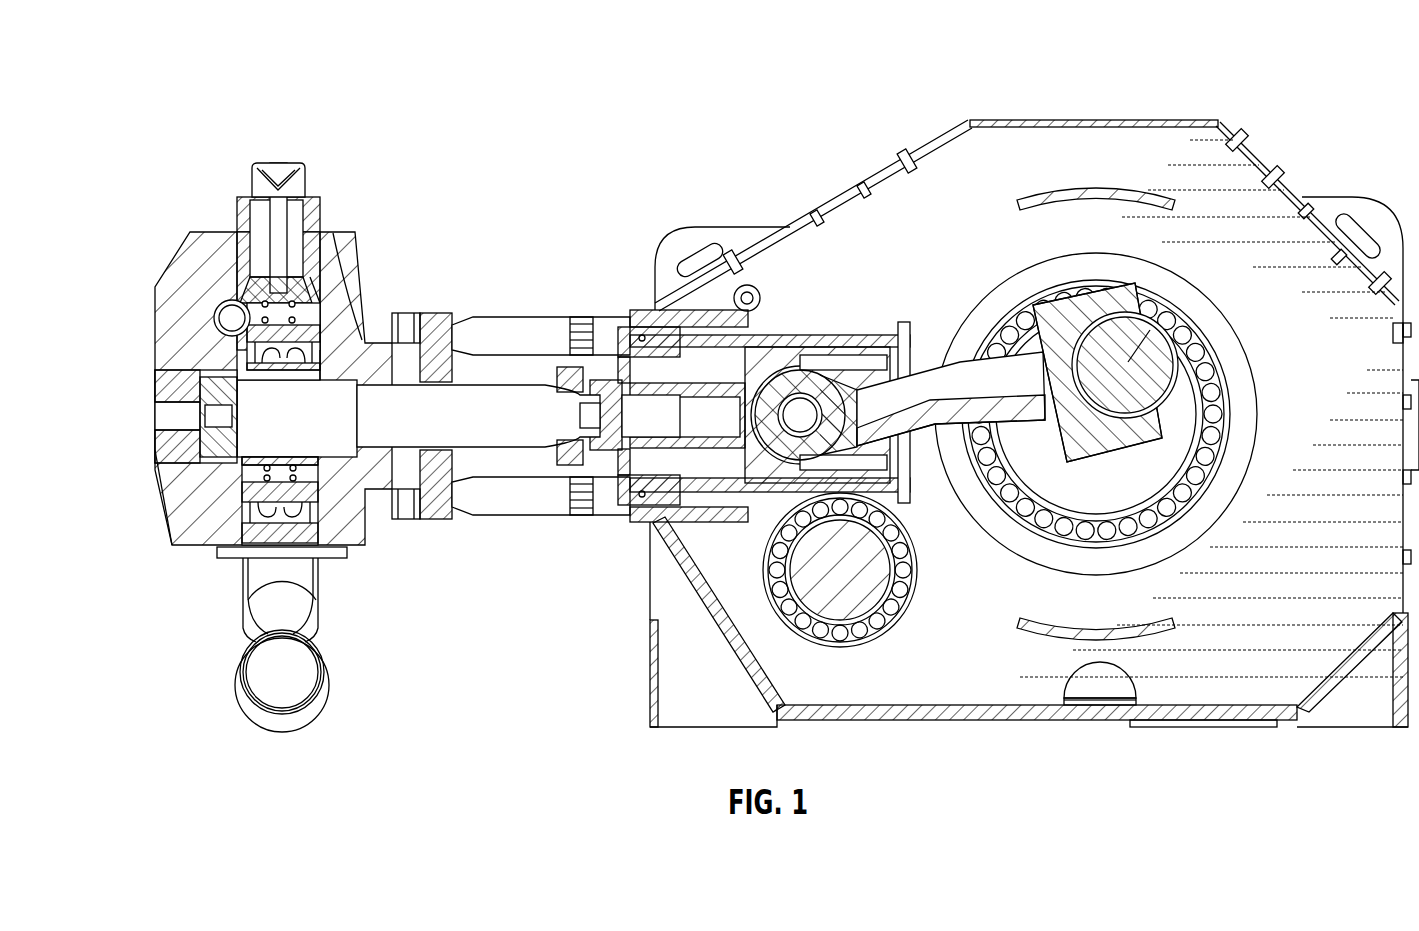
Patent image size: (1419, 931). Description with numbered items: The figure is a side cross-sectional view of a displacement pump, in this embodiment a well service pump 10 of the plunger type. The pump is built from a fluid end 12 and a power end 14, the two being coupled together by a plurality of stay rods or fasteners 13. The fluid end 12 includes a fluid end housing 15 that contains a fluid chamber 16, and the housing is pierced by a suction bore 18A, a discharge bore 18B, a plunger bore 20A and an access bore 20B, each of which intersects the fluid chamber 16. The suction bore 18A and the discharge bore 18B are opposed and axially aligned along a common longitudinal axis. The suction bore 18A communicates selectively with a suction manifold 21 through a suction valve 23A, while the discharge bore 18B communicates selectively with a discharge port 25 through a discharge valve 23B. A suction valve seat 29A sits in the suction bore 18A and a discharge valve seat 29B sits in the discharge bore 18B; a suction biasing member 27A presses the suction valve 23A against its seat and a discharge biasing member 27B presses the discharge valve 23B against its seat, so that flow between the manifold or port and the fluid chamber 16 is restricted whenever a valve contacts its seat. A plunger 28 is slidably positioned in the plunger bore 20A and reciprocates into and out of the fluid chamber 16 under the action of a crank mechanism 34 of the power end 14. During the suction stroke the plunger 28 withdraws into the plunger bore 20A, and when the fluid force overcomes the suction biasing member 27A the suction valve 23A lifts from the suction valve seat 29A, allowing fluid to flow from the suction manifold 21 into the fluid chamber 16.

The well service pump 10 is at (246, 117).
The fluid end 12 is at (330, 238).
The stay rods or fasteners 13 is at (398, 313).
The power end 14 is at (1042, 120).
The fluid end housing 15 is at (198, 240).
The fluid chamber 16 is at (170, 455).
The suction bore 18A is at (247, 470).
The discharge bore 18B is at (219, 305).
The plunger bore 20A is at (345, 432).
The access bore 20B is at (240, 412).
The suction manifold 21 is at (320, 700).
The suction valve 23A is at (255, 522).
The discharge valve 23B is at (285, 340).
The discharge port 25 is at (233, 318).
The suction biasing member 27A is at (255, 480).
The discharge biasing member 27B is at (350, 232).
The plunger 28 is at (475, 400).
The suction valve seat 29A is at (310, 517).
The discharge valve seat 29B is at (322, 285).
The crank mechanism 34 is at (915, 462).